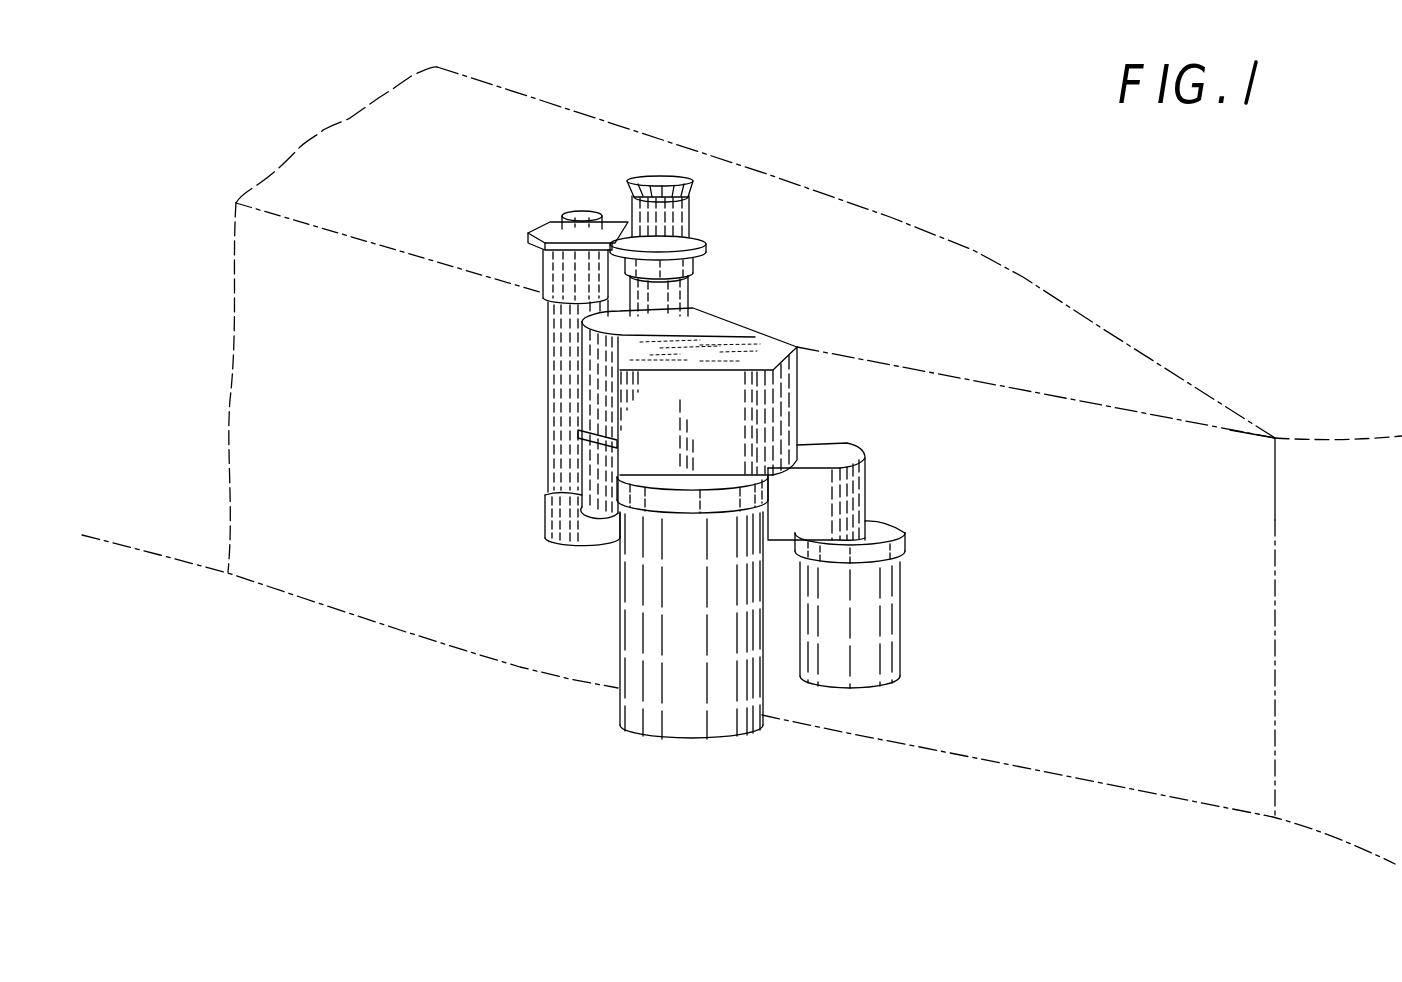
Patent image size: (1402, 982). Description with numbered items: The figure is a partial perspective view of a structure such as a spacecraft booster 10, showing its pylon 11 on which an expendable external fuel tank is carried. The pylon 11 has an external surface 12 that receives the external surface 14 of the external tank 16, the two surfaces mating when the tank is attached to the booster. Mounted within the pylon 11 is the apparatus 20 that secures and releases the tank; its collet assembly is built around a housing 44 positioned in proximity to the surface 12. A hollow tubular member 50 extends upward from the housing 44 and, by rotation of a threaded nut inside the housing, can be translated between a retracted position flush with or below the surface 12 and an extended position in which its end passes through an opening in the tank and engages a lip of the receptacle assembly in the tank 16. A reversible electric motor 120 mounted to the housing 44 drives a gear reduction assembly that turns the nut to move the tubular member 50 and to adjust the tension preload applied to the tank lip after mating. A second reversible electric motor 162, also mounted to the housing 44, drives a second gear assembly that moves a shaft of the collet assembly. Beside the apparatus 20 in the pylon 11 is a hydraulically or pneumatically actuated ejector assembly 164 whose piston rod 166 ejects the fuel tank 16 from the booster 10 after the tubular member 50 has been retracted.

The spacecraft booster 10 is at (131, 542).
The pylon 11 is at (1276, 690).
The external surface 12 is at (1048, 337).
The external surface 14 is at (1352, 446).
The external tank 16 is at (1312, 442).
The apparatus 20 is at (758, 321).
The housing 44 is at (578, 405).
The hollow tubular member 50 is at (690, 184).
The reversible electric motor 120 is at (633, 733).
The second reversible electric motor 162 is at (849, 692).
The ejector assembly 164 is at (543, 270).
The piston rod 166 is at (582, 212).